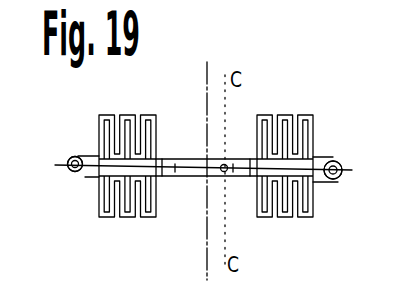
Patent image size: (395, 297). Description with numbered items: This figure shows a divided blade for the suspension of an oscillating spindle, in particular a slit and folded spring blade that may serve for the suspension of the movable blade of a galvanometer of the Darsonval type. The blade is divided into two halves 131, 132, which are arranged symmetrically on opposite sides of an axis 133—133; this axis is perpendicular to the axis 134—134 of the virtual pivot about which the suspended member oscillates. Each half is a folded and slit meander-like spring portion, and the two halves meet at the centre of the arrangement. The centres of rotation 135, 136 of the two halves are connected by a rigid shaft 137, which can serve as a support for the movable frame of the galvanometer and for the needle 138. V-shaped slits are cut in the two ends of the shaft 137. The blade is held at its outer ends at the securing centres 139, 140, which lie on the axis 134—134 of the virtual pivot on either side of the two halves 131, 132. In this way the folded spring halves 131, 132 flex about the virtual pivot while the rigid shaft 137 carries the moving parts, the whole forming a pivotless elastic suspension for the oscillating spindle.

The half of the divided blade 131 is at (131, 212).
The half of the divided blade 132 is at (286, 215).
The axis of symmetry 133 is at (208, 65).
The axis of the virtual pivot 134 is at (66, 163).
The centre of rotation 135 is at (176, 159).
The centre of rotation 136 is at (245, 159).
The rigid shaft 137 is at (195, 176).
The needle 138 is at (229, 176).
The securing centre 139 is at (77, 173).
The securing centre 140 is at (335, 162).